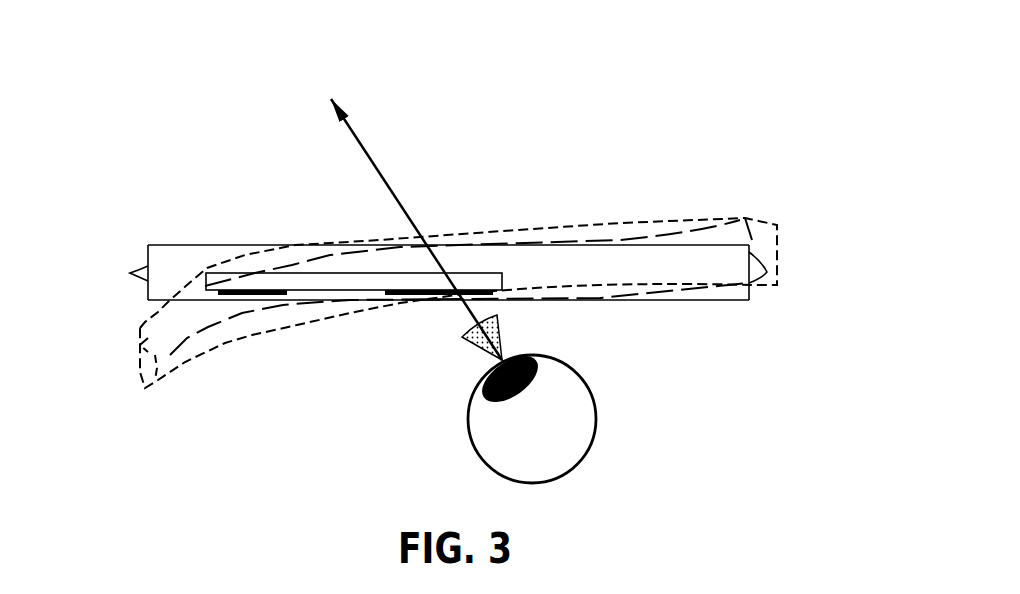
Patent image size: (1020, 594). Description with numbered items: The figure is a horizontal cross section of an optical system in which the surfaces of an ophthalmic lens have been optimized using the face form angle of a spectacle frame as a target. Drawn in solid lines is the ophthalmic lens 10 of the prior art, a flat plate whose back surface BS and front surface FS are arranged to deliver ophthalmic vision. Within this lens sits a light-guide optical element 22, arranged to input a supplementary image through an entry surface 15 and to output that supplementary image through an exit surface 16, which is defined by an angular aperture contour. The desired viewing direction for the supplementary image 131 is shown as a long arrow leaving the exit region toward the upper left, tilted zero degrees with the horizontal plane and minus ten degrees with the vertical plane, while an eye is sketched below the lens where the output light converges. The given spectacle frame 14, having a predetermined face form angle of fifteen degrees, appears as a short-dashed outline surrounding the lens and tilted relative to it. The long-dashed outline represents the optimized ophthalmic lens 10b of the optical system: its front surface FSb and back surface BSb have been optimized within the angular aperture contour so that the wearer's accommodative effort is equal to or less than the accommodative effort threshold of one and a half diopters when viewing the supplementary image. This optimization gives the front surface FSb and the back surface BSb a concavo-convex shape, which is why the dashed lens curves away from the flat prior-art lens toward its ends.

The ophthalmic lens 10 is at (425, 303).
The ophthalmic lens of the optical system 10b is at (496, 246).
The spectacle frame 14 is at (139, 368).
The entry surface 15 is at (260, 296).
The exit surface 16 is at (421, 301).
The light-guide optical element 22 is at (222, 271).
The desired viewing direction for the supplementary image 131 is at (404, 216).
The front surface FS is at (252, 242).
The back surface BS is at (187, 304).
The front surface of the optimized ophthalmic lens FSb is at (690, 230).
The back surface of the optimized ophthalmic lens BSb is at (207, 324).